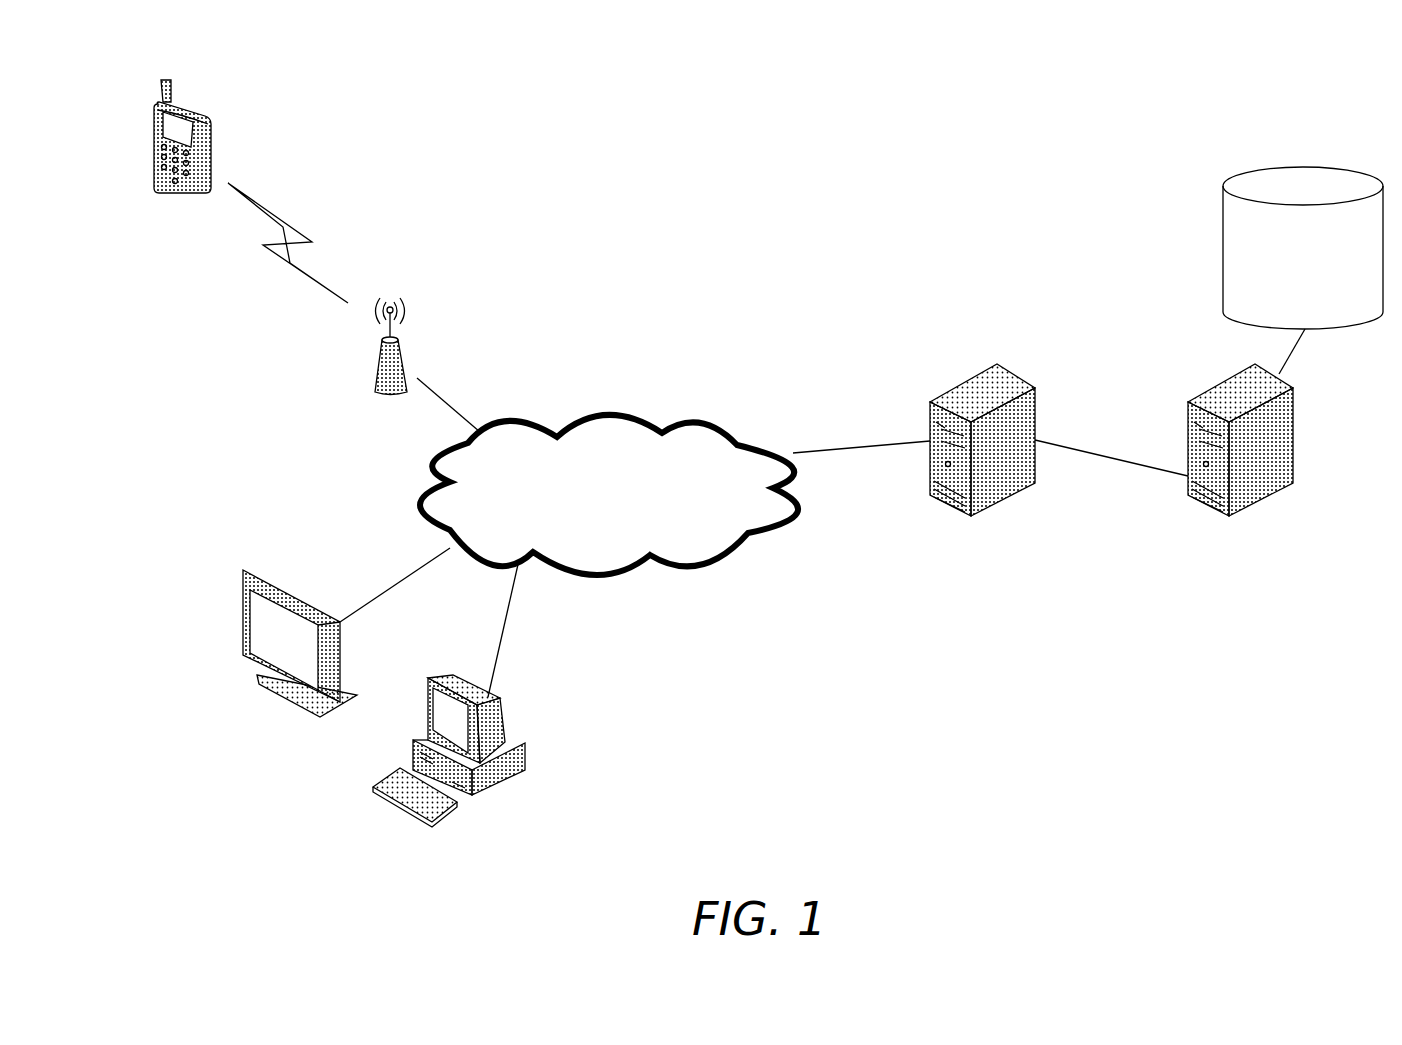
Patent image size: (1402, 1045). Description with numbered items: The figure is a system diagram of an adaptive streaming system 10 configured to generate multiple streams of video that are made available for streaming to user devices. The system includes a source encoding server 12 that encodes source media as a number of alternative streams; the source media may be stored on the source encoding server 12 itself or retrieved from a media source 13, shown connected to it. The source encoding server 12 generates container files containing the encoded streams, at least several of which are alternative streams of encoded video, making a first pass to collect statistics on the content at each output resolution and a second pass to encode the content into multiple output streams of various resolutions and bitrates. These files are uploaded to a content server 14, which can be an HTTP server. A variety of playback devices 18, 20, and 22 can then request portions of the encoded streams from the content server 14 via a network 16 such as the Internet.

The adaptive streaming system 10 is at (773, 230).
The source encoding server 12 is at (1293, 436).
The media source 13 is at (1222, 247).
The content server 14 is at (1014, 371).
The network 16 is at (650, 556).
The playback device 18 is at (268, 690).
The playback device 20 is at (202, 108).
The playback device 22 is at (378, 798).